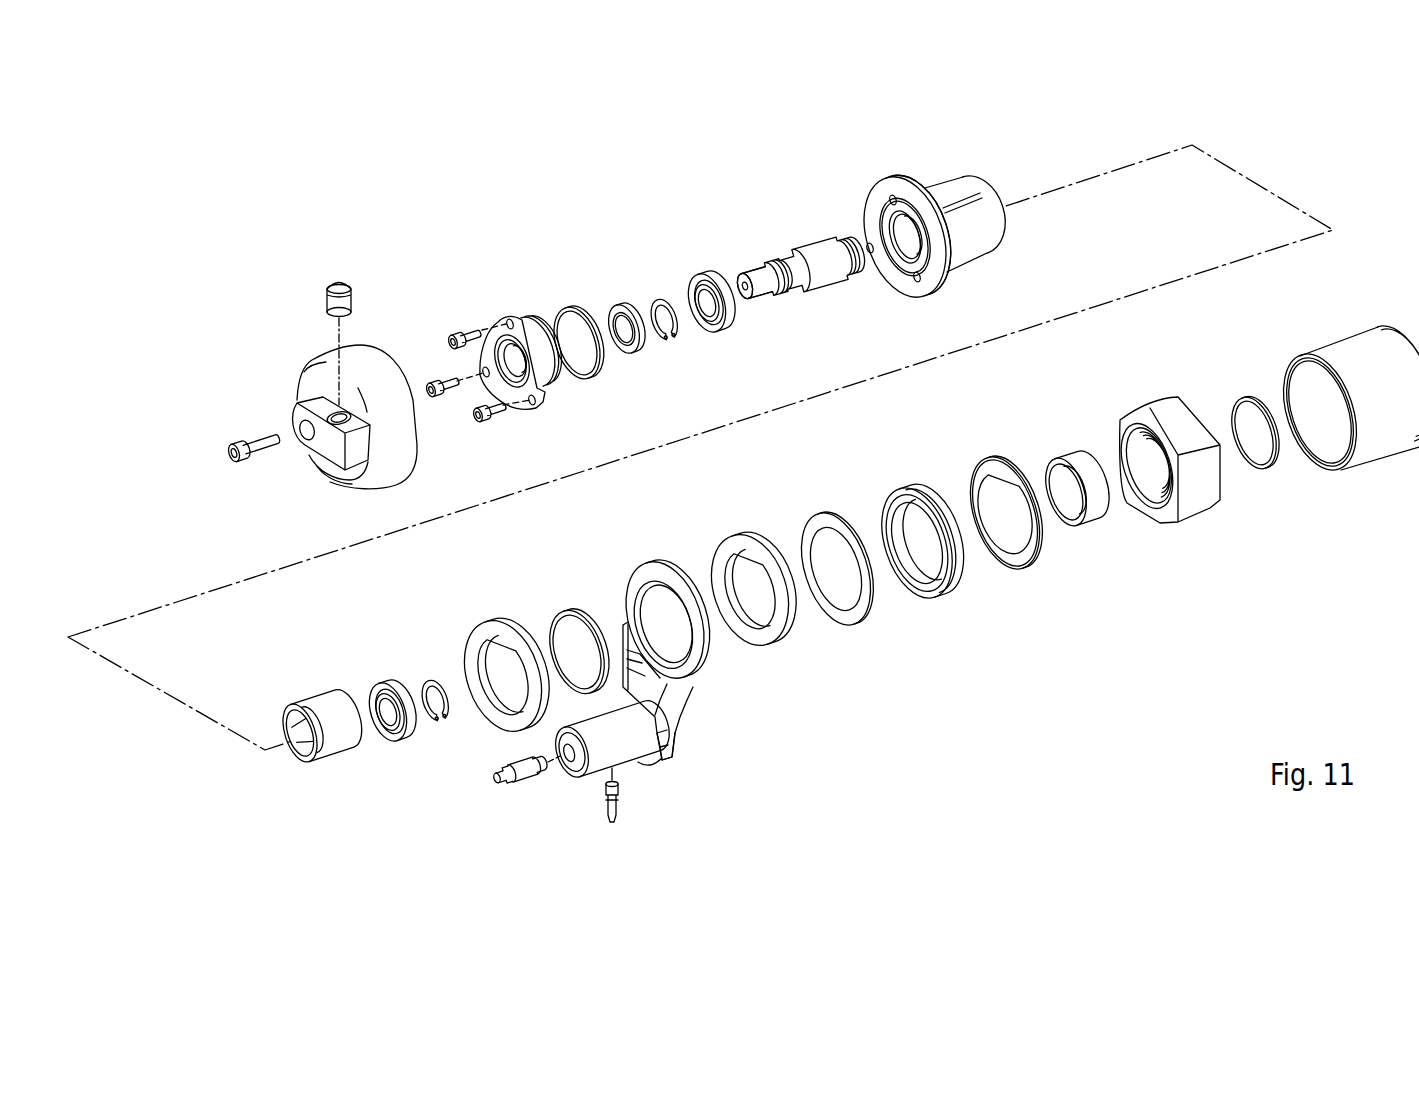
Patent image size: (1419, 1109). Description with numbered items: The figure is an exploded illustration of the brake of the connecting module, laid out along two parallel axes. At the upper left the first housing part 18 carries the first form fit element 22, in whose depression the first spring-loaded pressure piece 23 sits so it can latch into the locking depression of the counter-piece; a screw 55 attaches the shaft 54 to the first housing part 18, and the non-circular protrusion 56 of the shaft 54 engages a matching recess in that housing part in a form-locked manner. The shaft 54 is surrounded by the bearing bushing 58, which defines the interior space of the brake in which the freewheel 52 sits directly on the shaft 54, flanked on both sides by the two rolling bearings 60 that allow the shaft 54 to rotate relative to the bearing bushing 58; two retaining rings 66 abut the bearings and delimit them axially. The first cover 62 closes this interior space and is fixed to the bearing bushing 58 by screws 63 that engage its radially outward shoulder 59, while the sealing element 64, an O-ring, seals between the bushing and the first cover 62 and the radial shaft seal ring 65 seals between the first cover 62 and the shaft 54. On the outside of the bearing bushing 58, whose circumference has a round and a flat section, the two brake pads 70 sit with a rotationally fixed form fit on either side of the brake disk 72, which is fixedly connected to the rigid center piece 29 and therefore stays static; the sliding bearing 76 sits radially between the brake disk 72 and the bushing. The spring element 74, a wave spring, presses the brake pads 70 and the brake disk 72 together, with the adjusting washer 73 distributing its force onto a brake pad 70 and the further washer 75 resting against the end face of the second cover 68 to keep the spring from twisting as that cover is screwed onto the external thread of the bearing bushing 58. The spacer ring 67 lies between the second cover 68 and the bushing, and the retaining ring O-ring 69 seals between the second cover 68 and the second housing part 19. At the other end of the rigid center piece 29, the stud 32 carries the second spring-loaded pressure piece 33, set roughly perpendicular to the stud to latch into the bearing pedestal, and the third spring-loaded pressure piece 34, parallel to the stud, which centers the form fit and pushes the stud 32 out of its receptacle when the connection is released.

The first housing part 18 is at (369, 358).
The second housing part 19 is at (1357, 352).
The first form fit element 22 is at (328, 458).
The first spring-loaded pressure piece 23 is at (332, 303).
The rigid center piece 29 is at (682, 721).
The second form fit element 32 is at (592, 770).
The second spring-loaded pressure piece 33 is at (620, 801).
The third spring-loaded pressure piece 34 is at (493, 783).
The freewheel 52 is at (322, 715).
The shaft 54 is at (826, 262).
The screw 55 is at (229, 448).
The non-circular protrusion 56 is at (748, 300).
The bearing bushing 58 is at (935, 195).
The shoulder 59 is at (946, 282).
The rolling bearings 60 is at (710, 280).
The first cover 62 is at (517, 340).
The screws 63 is at (457, 331).
The sealing element 64 is at (570, 306).
The radial shaft seal ring 65 is at (628, 313).
The retaining rings 66 is at (658, 298).
The spacer ring 67 is at (1083, 465).
The second cover 68 is at (1183, 417).
The retaining ring O-ring 69 is at (1247, 398).
The brake pads 70 is at (493, 627).
The brake disk 72 is at (651, 569).
The adjusting washer 73 is at (816, 525).
The spring element 74 is at (898, 492).
The washer 75 is at (990, 467).
The sliding bearing 76 is at (583, 617).